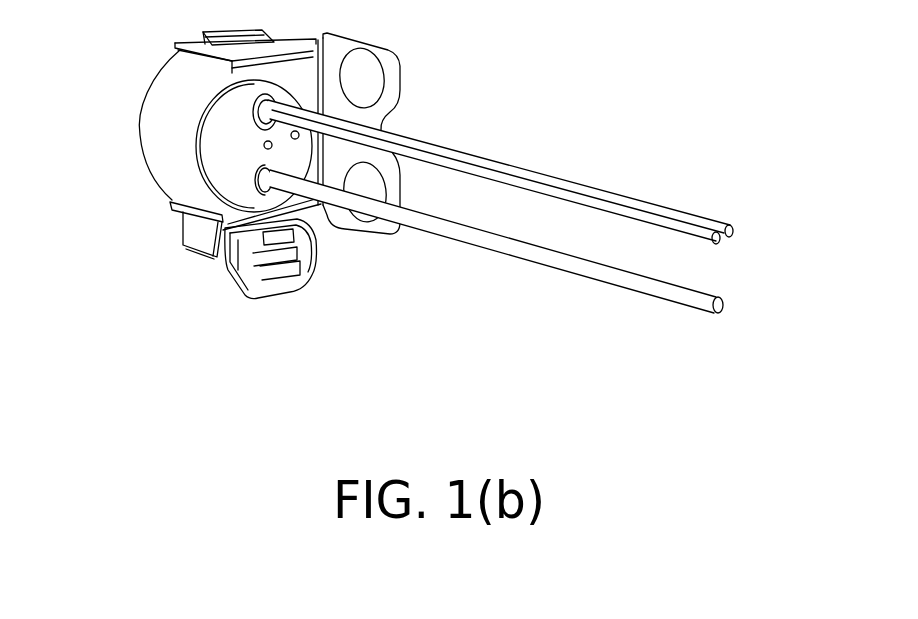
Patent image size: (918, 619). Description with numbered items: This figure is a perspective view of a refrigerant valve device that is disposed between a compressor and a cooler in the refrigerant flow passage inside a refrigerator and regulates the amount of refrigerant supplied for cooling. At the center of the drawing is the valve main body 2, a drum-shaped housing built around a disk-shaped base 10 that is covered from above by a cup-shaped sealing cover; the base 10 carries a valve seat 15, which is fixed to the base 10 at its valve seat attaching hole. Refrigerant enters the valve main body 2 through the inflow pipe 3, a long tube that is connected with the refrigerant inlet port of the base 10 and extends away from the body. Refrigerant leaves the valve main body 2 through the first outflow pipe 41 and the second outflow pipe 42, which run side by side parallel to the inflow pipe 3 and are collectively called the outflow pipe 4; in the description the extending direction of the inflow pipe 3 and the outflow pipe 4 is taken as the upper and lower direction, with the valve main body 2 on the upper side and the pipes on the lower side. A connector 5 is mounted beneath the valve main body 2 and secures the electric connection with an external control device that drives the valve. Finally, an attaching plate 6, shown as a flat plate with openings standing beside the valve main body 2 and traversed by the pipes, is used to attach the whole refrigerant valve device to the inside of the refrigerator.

The valve main body 2 is at (158, 163).
The base 10 is at (237, 158).
The valve seat 15 is at (257, 137).
The attaching plate 6 is at (392, 82).
The outflow pipe 4 is at (500, 148).
The first outflow pipe 41 is at (660, 100).
The second outflow pipe 42 is at (608, 197).
The inflow pipe 3 is at (534, 252).
The connector 5 is at (316, 268).